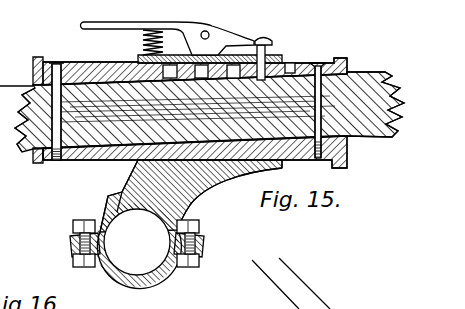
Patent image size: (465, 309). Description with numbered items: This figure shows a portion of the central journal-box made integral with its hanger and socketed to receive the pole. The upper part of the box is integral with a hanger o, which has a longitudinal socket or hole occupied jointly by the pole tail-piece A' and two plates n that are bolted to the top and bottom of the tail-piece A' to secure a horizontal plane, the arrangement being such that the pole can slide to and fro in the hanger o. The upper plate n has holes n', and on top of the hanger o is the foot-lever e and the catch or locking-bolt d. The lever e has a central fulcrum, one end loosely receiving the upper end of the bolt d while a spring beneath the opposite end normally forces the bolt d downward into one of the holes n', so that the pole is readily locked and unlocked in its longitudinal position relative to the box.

The foot-lever e is at (168, 30).
The catch or locking-bolt d is at (265, 37).
The hanger o is at (290, 66).
The plates n is at (126, 156).
The holes n' is at (314, 99).
The tail-piece A' is at (202, 112).